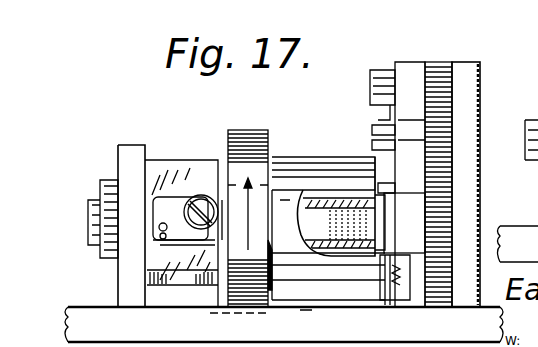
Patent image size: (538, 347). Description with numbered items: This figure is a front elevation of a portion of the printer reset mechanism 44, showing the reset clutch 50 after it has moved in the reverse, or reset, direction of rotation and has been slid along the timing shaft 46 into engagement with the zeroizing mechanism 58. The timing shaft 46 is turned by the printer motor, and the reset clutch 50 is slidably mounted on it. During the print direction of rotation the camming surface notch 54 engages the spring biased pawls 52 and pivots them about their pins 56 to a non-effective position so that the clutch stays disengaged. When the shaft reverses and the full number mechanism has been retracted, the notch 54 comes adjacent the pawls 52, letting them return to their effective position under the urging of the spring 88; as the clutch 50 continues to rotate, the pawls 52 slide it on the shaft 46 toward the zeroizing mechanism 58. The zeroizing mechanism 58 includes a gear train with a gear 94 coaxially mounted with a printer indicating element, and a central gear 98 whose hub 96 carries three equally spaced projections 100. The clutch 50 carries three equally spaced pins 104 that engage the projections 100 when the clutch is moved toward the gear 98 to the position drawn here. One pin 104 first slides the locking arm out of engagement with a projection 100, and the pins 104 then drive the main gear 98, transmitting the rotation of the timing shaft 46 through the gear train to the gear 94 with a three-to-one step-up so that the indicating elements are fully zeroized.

The printer reset mechanism 44 is at (357, 135).
The timing shaft 46 is at (86, 213).
The reset clutch 50 is at (296, 190).
The pawls 52 is at (160, 202).
The notch 54 is at (230, 132).
The pins 56 is at (214, 198).
The zeroizing mechanism 58 is at (406, 50).
The spring 88 is at (178, 230).
The gear 94 is at (440, 66).
The hub 96 is at (407, 237).
The central gear 98 is at (445, 201).
The projections 100 is at (410, 196).
The pins 104 is at (383, 185).